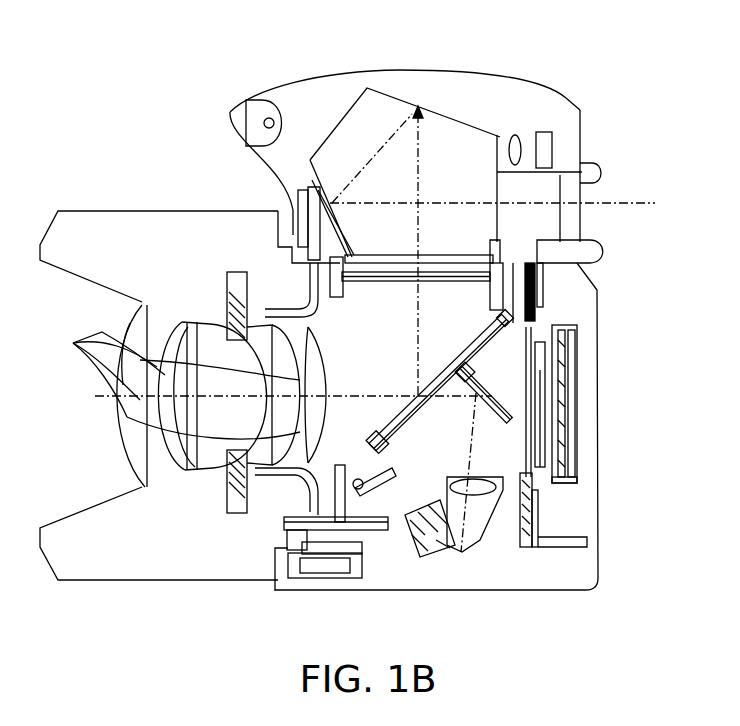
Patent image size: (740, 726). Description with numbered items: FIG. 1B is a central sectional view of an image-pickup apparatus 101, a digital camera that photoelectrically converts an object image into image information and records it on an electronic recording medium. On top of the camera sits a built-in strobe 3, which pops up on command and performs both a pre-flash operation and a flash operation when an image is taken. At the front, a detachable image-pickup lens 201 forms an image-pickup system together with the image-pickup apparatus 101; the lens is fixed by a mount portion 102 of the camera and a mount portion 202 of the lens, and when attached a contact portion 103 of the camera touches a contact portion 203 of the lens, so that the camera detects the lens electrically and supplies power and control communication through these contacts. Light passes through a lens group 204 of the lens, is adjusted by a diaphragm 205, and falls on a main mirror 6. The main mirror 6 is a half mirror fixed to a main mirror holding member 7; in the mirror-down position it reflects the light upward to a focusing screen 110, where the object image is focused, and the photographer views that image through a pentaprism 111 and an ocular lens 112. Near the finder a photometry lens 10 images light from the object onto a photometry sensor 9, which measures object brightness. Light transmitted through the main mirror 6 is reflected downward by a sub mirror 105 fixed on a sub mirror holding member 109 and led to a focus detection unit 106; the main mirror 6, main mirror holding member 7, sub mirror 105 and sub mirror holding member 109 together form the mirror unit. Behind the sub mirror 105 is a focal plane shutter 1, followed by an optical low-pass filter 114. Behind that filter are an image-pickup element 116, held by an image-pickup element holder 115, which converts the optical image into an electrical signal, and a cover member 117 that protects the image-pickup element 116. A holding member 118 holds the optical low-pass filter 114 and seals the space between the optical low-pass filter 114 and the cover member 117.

The focal plane shutter 1 is at (518, 540).
The built-in strobe 3 is at (255, 110).
The main mirror 6 is at (400, 438).
The main mirror holding member 7 is at (379, 493).
The photometry sensor 9 is at (545, 150).
The photometry lens 10 is at (513, 140).
The image-pickup apparatus 101 is at (305, 92).
The mount portion 102 is at (295, 213).
The contact portion 103 is at (340, 520).
The sub mirror 105 is at (466, 392).
The focus detection unit 106 is at (453, 557).
The sub mirror holding member 109 is at (488, 400).
The focusing screen 110 is at (362, 282).
The pentaprism 111 is at (458, 118).
The ocular lens 112 is at (575, 195).
The optical low-pass filter 114 is at (536, 378).
The image-pickup element holder 115 is at (560, 481).
The image-pickup element 116 is at (567, 465).
The cover member 117 is at (555, 395).
The holding member 118 is at (547, 353).
The image-pickup lens 201 is at (107, 221).
The mount portion 202 is at (288, 217).
The contact portion 203 is at (282, 522).
The lens group 204 is at (73, 343).
The diaphragm 205 is at (222, 470).